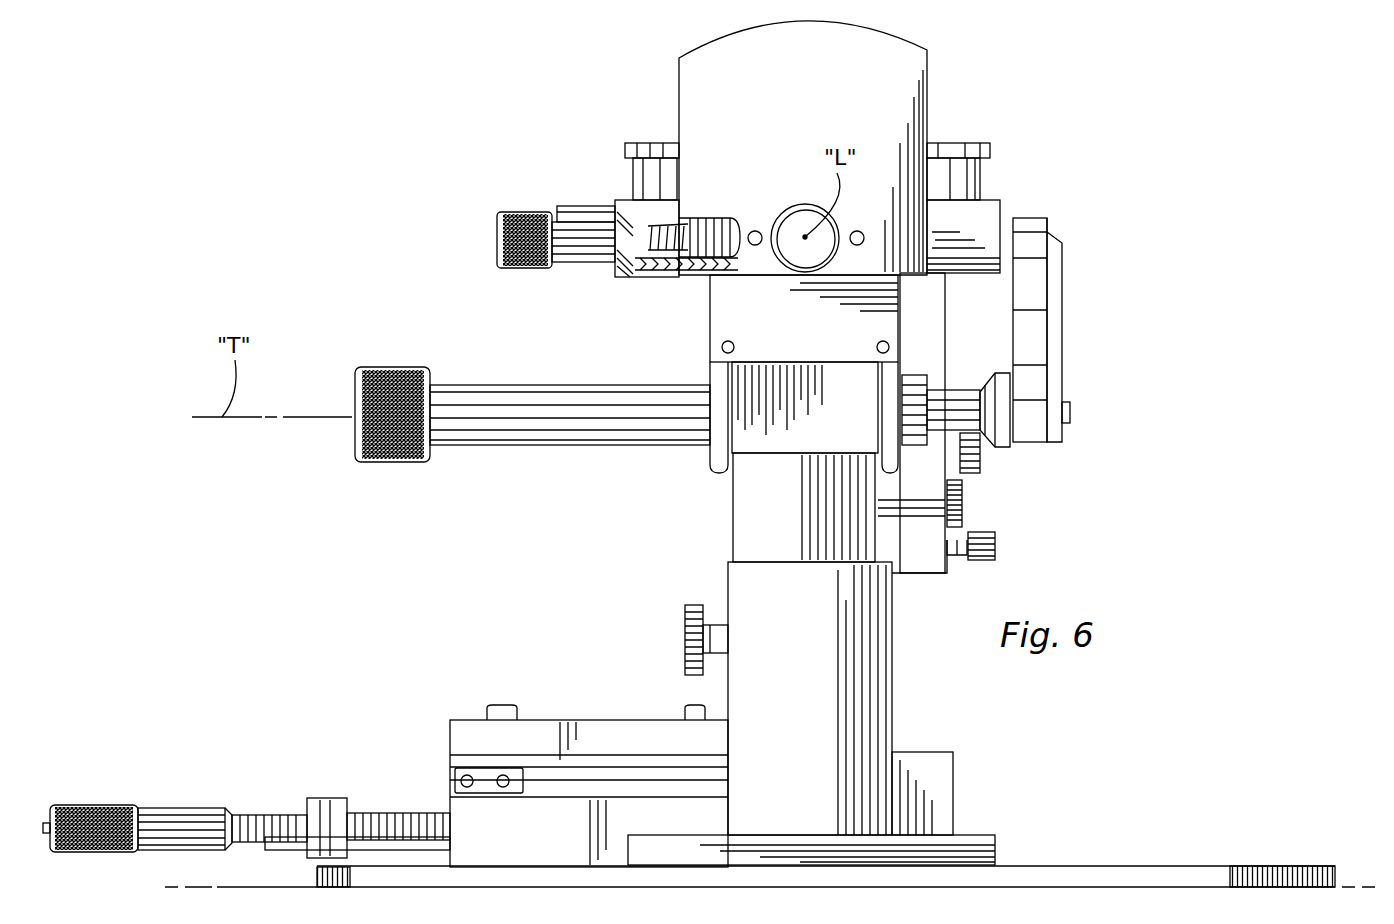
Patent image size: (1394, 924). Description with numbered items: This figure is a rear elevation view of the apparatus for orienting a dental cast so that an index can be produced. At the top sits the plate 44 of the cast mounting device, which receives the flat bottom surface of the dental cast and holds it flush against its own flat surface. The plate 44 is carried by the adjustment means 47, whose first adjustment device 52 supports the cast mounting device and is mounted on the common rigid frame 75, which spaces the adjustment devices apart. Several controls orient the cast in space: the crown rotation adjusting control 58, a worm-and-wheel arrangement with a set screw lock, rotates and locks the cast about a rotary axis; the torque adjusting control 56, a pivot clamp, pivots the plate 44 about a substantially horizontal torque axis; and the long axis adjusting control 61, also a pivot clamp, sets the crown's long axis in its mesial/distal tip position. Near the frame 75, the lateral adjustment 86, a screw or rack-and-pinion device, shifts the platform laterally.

The plate 44 is at (973, 147).
The adjustment means 47 is at (946, 345).
The first adjustment device 52 is at (668, 287).
The torque adjusting control 56 is at (395, 367).
The crown rotation adjusting control 58 is at (525, 268).
The long axis adjusting control 61 is at (788, 217).
The rigid frame 75 is at (1180, 862).
The lateral adjustment 86 is at (188, 808).